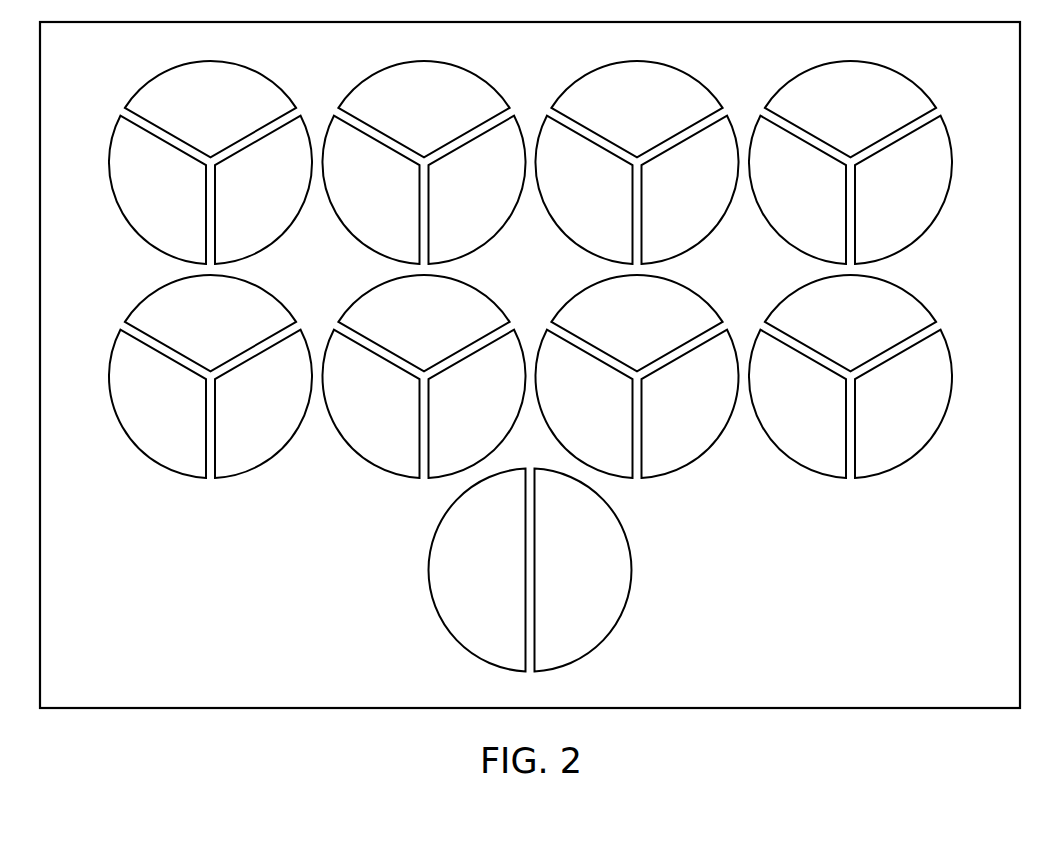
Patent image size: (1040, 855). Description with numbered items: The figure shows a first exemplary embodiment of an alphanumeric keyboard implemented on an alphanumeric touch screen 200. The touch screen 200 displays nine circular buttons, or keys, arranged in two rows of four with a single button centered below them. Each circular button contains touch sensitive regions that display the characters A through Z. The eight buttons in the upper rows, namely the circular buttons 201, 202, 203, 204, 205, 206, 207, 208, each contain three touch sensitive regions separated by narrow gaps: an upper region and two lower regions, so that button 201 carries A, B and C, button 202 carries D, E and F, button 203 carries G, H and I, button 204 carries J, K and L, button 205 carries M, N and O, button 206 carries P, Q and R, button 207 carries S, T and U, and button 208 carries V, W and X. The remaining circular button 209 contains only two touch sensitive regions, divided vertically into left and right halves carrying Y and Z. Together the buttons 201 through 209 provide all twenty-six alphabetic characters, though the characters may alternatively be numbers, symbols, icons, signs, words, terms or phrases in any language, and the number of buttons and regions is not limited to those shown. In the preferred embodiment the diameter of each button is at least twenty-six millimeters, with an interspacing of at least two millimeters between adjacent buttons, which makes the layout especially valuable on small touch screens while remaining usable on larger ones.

The alphanumeric touch screen 200 is at (190, 709).
The circular button 201 is at (209, 155).
The circular button 202 is at (422, 155).
The circular button 203 is at (635, 155).
The circular button 204 is at (849, 155).
The circular button 205 is at (209, 369).
The circular button 206 is at (422, 369).
The circular button 207 is at (635, 369).
The circular button 208 is at (849, 369).
The circular button 209 is at (492, 570).